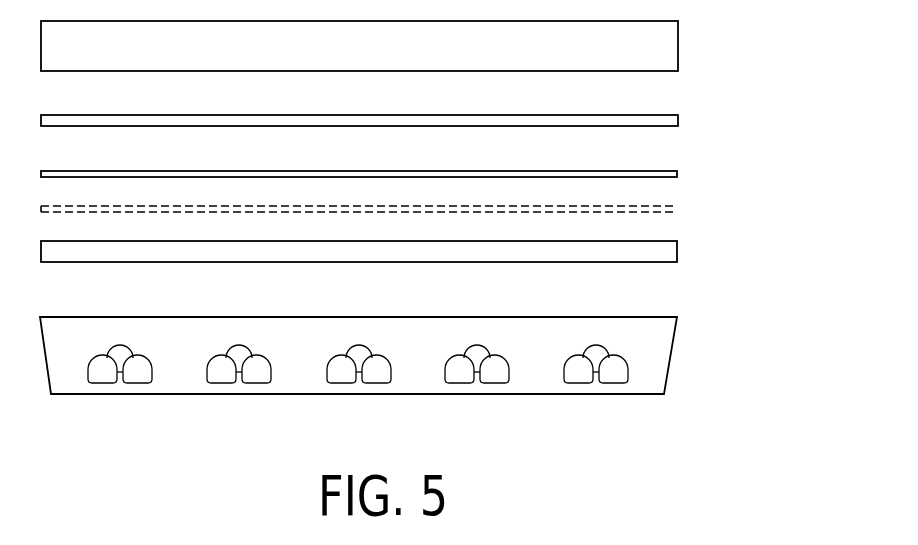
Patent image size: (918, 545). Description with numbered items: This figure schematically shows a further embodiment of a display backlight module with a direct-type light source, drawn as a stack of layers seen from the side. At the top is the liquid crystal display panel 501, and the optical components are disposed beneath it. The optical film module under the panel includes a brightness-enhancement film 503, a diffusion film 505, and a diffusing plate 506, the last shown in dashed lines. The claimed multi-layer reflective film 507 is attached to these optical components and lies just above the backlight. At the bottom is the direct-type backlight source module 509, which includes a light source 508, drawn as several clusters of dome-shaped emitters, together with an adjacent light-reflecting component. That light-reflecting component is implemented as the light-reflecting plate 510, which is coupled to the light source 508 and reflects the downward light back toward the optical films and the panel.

The liquid crystal display panel 501 is at (678, 47).
The brightness-enhancement film 503 is at (678, 120).
The diffusion film 505 is at (672, 172).
The diffusing plate 506 is at (677, 209).
The multi-layer reflective film 507 is at (677, 251).
The light source 508 is at (612, 368).
The direct-type backlight source module 509 is at (668, 353).
The light-reflecting plate 510 is at (173, 394).